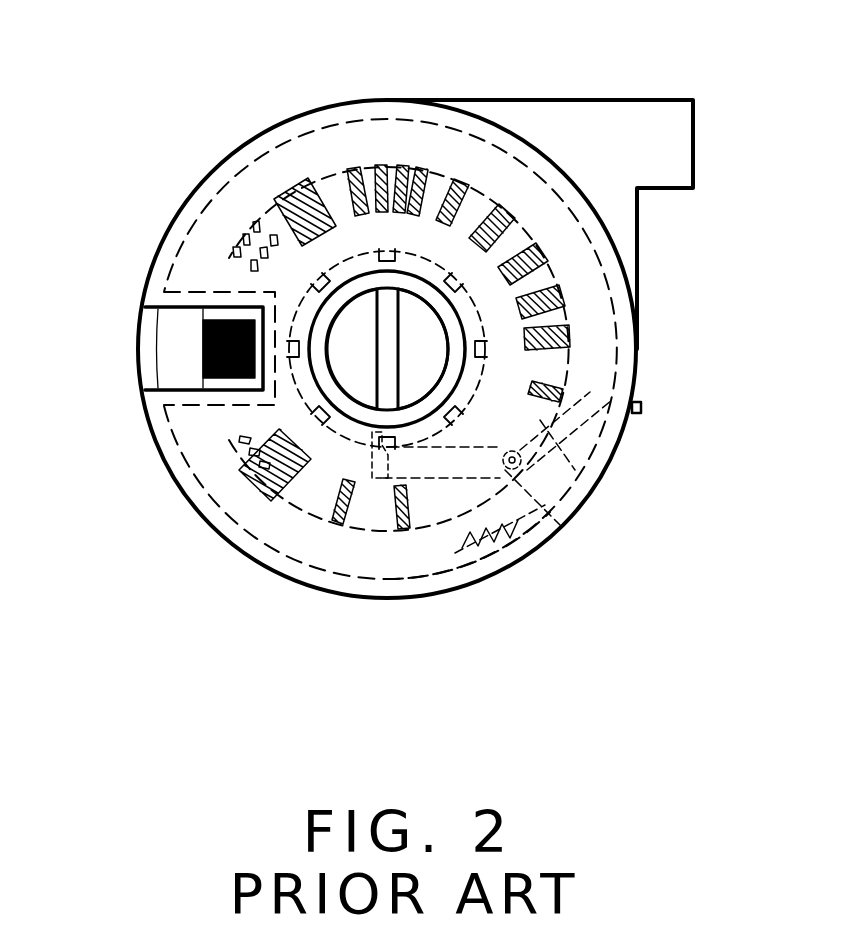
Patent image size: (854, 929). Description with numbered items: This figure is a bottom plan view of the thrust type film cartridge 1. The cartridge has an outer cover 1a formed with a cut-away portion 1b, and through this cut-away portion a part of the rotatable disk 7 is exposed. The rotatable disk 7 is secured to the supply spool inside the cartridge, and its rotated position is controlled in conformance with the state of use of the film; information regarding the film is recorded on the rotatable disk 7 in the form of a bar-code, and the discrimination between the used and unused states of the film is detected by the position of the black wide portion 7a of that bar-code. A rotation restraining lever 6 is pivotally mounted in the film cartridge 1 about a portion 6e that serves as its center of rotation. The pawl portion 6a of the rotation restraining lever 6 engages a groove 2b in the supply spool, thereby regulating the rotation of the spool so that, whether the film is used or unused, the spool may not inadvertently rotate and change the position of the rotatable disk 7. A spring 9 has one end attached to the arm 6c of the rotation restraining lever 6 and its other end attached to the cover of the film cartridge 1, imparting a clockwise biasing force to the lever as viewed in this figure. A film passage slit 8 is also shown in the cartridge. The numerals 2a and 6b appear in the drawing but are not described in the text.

The thrust type film cartridge 1 is at (230, 148).
The outer cover 1a is at (285, 118).
The cut-away portion 1b is at (163, 316).
The rotor 2a is at (345, 337).
The groove 2b is at (387, 247).
The rotatable disk 7 is at (405, 165).
The black wide portion 7a is at (200, 357).
The film passage slit 8 is at (694, 131).
The rotation restraining lever 6 is at (608, 478).
The pawl portion 6a is at (377, 450).
The lever stopper 6b is at (645, 408).
The arm 6c is at (555, 528).
The center of rotation portion 6e is at (560, 490).
The spring 9 is at (505, 555).